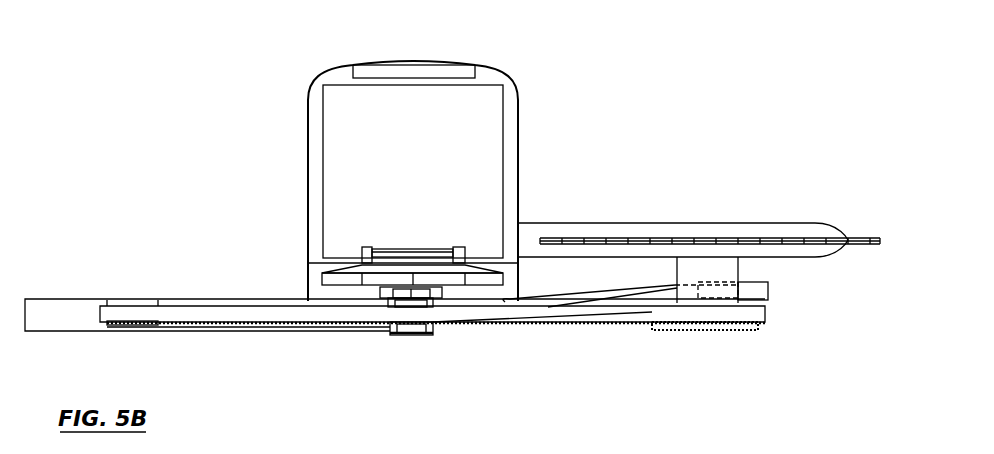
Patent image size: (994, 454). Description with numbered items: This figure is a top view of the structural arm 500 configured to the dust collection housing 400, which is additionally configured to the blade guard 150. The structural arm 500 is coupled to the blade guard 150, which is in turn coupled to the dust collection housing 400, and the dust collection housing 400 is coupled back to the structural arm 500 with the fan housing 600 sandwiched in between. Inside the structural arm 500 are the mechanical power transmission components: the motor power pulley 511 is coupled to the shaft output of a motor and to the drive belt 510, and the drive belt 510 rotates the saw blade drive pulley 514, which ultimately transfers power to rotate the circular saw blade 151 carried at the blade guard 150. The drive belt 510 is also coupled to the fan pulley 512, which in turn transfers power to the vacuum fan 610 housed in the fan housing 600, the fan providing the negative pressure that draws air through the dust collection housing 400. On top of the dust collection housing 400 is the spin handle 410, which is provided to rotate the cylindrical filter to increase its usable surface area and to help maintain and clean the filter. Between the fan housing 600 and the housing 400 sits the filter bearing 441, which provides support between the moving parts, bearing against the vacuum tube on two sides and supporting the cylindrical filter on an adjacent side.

The dust collection housing 400 is at (520, 125).
The spin handle 410 is at (425, 68).
The filter bearing 441 is at (362, 250).
The fan housing 600 is at (320, 273).
The vacuum fan 610 is at (498, 280).
The blade guard 150 is at (810, 258).
The circular saw blade 151 is at (857, 243).
The structural arm 500 is at (47, 303).
The motor power pulley 511 is at (138, 298).
The drive belt 510 is at (607, 324).
The fan pulley 512 is at (470, 326).
The saw blade drive pulley 514 is at (680, 331).